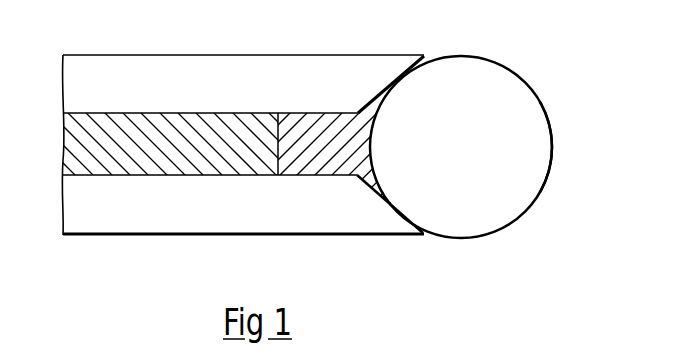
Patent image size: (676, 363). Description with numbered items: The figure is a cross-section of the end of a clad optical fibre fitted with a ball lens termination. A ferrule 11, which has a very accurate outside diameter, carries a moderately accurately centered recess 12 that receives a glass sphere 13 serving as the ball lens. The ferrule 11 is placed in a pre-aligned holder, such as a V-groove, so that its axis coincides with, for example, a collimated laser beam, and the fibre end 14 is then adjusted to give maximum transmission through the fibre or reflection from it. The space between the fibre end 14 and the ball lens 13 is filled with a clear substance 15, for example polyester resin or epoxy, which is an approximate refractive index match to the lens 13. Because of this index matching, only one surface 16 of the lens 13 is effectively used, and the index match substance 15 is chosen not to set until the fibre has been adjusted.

The ferrule 11 is at (253, 60).
The recess 12 is at (378, 187).
The glass sphere 13 is at (518, 90).
The fibre end 14 is at (276, 167).
The clear substance 15 is at (343, 171).
The surface 16 is at (552, 140).